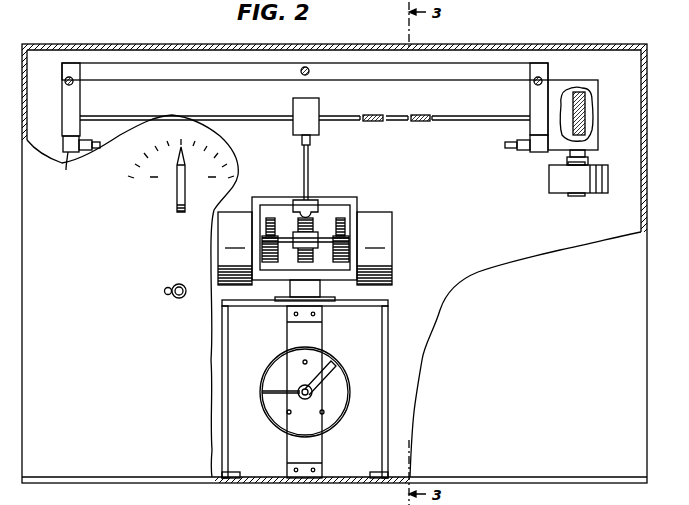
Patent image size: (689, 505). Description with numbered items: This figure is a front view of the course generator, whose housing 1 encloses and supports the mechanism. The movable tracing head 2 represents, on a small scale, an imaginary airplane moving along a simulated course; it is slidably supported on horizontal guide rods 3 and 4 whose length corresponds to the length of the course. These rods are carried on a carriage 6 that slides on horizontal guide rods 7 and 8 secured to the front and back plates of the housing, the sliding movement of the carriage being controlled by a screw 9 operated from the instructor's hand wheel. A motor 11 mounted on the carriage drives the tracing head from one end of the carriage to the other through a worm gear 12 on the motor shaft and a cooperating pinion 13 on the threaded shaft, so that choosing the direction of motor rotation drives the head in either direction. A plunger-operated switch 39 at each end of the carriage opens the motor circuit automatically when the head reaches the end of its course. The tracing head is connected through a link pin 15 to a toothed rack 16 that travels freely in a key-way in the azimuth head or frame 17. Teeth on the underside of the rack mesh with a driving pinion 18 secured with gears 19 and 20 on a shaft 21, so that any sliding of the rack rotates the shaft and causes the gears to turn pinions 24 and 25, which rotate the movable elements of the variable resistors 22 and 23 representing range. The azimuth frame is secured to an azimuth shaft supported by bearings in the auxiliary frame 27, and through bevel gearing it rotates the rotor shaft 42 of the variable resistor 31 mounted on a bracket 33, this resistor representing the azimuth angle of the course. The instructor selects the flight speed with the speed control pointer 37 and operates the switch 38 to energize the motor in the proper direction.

The housing 1 is at (568, 252).
The tracing head 2 is at (293, 104).
The horizontal guide rod 3 is at (466, 123).
The horizontal guide rod 4 is at (404, 114).
The carriage 6 is at (199, 83).
The horizontal guide rod 7 is at (533, 84).
The horizontal guide rod 8 is at (74, 84).
The screw 9 is at (309, 76).
The motor 11 is at (549, 182).
The worm gear 12 is at (583, 134).
The pinion 13 is at (582, 104).
The link pin 15 is at (310, 162).
The rack 16 is at (298, 206).
The azimuth head or frame 17 is at (360, 205).
The driving pinion 18 is at (312, 258).
The gear 19 is at (270, 218).
The gear 20 is at (341, 218).
The shaft 21 is at (325, 240).
The variable resistor 22 is at (226, 250).
The variable resistor 23 is at (392, 242).
The pinion 24 is at (266, 232).
The pinion 25 is at (349, 238).
The auxiliary frame 27 is at (388, 306).
The variable resistor 31 is at (350, 392).
The bracket 33 is at (316, 336).
The speed control pointer 37 is at (176, 205).
The switch 38 is at (172, 290).
The plunger-operated switch 39 is at (70, 160).
The rotor shaft 42 is at (312, 392).